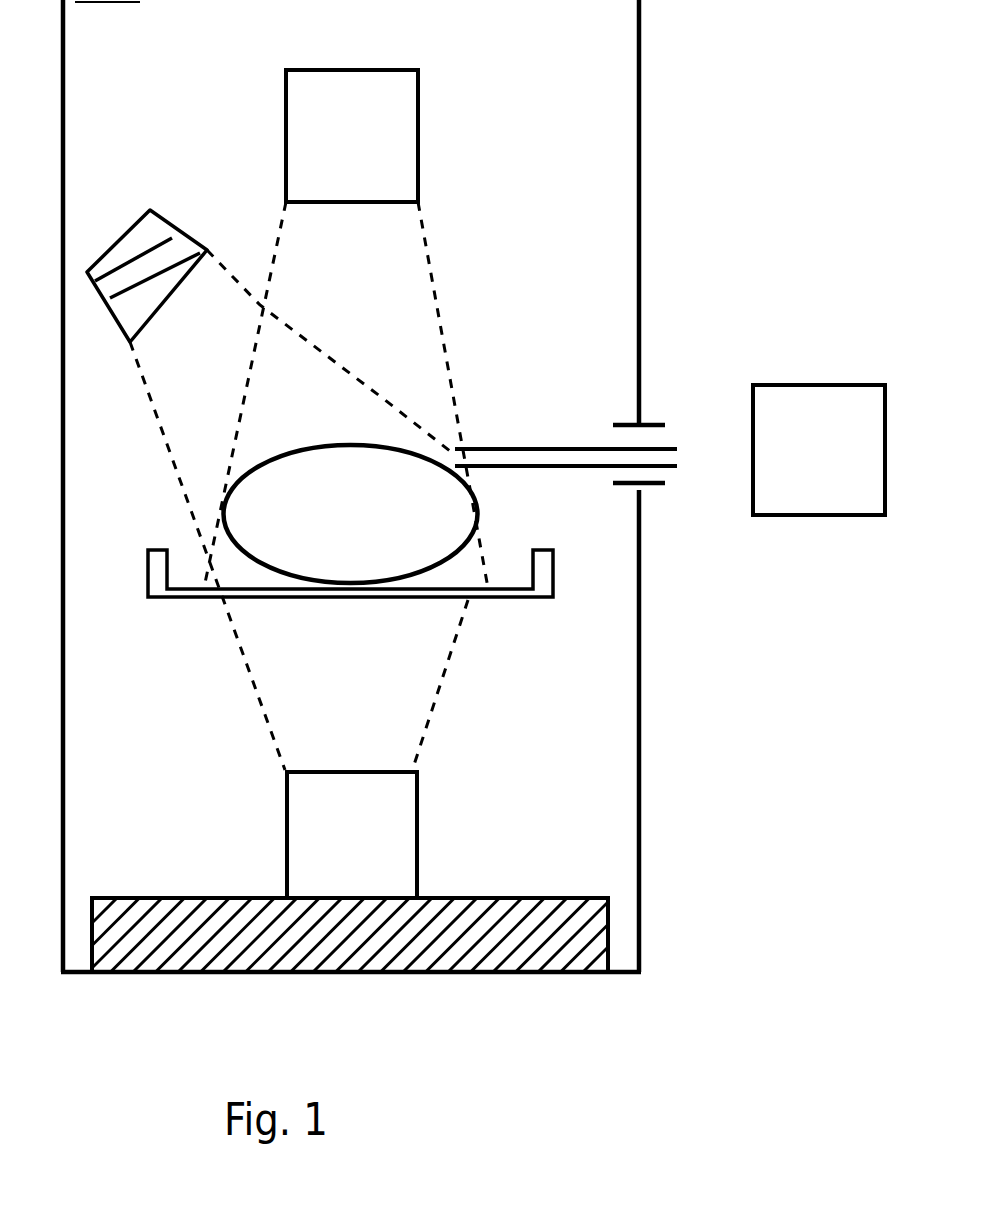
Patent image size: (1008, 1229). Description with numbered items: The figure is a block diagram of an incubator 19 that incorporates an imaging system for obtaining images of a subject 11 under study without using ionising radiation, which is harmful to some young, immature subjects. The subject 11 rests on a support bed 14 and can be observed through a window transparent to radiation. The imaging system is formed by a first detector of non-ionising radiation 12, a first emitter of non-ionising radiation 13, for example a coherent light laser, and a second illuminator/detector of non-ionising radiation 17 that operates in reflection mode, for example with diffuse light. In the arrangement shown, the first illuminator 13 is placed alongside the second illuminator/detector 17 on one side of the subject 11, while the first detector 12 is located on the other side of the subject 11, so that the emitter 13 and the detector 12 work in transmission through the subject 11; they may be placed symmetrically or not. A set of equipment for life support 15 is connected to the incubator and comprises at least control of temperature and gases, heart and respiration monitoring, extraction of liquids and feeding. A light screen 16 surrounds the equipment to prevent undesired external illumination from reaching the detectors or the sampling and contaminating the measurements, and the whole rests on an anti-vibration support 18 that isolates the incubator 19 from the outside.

The subject 11 is at (351, 514).
The first detector of non-ionising radiation 12 is at (352, 835).
The first emitter of non-ionising radiation 13 is at (352, 136).
The support bed 14 is at (523, 635).
The set of equipment for life support 15 is at (670, 450).
The light screen 16 is at (690, 638).
The second illuminator/detector of non-ionising radiation 17 is at (137, 182).
The anti-vibration support 18 is at (566, 996).
The incubator 19 is at (465, 486).